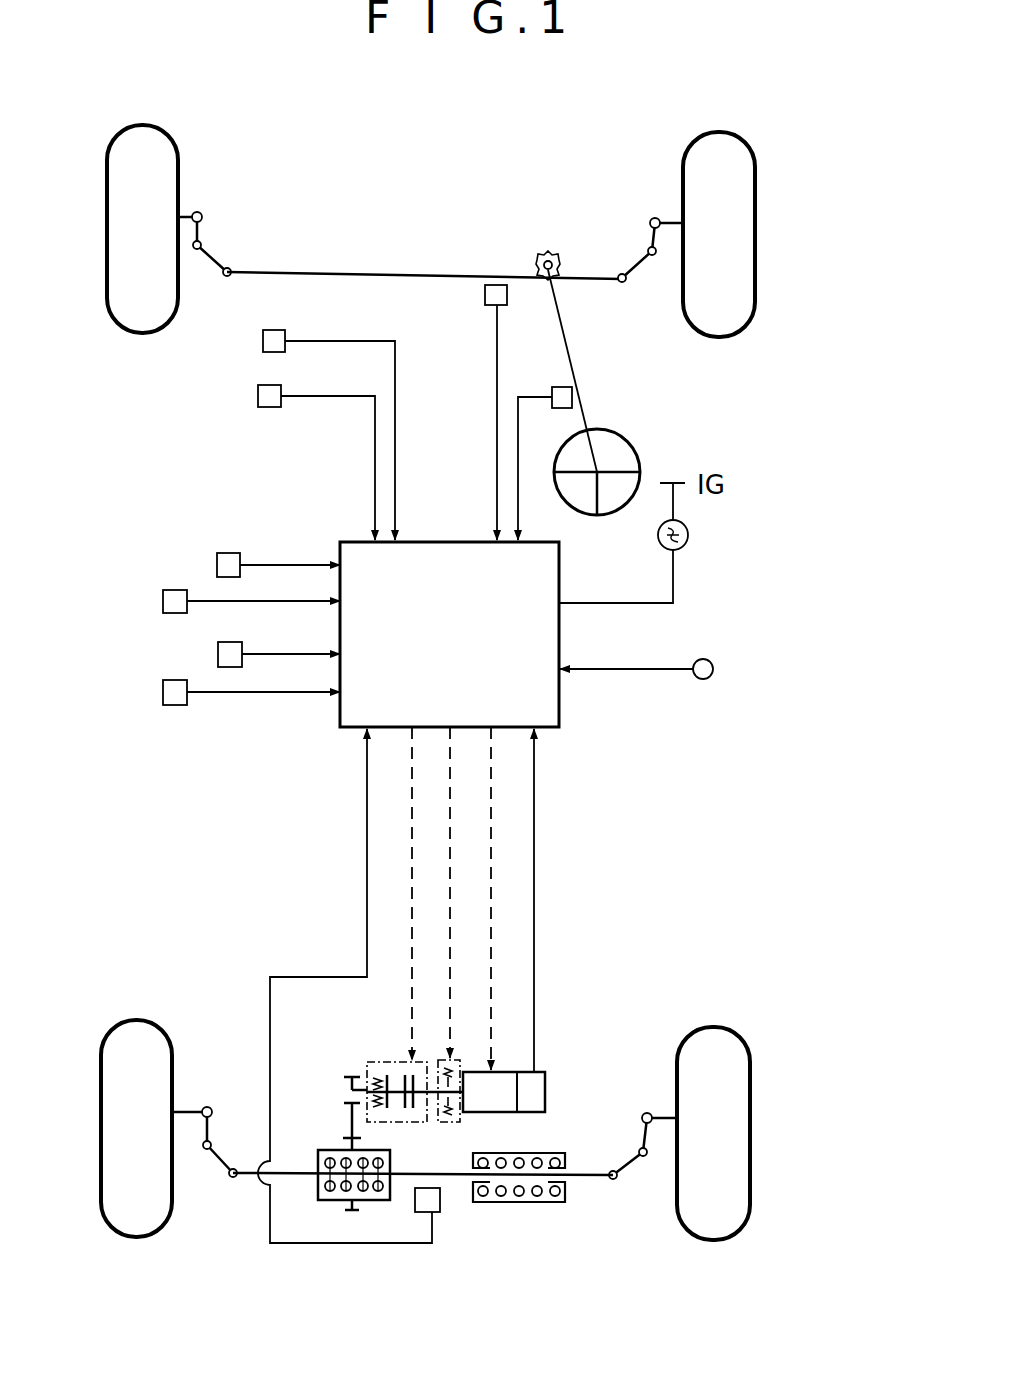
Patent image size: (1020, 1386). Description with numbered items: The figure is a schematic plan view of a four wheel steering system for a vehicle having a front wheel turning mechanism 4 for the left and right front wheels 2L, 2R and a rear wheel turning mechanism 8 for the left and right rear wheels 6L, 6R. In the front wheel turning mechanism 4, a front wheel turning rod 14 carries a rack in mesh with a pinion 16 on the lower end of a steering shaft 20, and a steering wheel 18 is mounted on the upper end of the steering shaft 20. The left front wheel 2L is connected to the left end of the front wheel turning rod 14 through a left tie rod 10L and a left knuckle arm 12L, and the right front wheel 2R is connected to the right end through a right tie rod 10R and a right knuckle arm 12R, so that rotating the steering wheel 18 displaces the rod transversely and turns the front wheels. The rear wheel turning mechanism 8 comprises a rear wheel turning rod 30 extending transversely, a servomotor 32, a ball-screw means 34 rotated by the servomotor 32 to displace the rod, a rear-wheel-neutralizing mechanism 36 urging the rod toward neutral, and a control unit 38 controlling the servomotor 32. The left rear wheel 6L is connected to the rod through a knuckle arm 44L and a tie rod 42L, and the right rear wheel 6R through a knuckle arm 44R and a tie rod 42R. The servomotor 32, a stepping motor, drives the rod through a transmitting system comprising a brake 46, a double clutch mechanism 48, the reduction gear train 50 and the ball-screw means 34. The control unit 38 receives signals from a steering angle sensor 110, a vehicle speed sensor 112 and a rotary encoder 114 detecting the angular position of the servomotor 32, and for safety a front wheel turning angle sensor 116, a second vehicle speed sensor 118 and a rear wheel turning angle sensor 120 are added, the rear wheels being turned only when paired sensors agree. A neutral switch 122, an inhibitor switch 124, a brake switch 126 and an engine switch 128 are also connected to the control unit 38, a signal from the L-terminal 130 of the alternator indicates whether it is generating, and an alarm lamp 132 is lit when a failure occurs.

The left front wheel 2L is at (160, 128).
The right front wheel 2R is at (740, 138).
The front wheel turning mechanism 4 is at (468, 225).
The left rear wheel 6L is at (158, 1020).
The right rear wheel 6R is at (750, 1055).
The rear wheel turning mechanism 8 is at (615, 1000).
The left tie rod 10L is at (218, 264).
The right tie rod 10R is at (632, 285).
The left knuckle arm 12L is at (205, 226).
The right knuckle arm 12R is at (645, 238).
The front wheel turning rod 14 is at (375, 270).
The pinion 16 is at (546, 248).
The steering wheel 18 is at (636, 447).
The steering shaft 20 is at (577, 383).
The rear wheel turning rod 30 is at (578, 1180).
The servomotor 32 is at (490, 1112).
The ball-screw means 34 is at (316, 1142).
The rear-wheel-neutralizing mechanism 36 is at (516, 1207).
The control unit 38 is at (559, 703).
The tie rod 42L is at (225, 1165).
The tie rod 42R is at (625, 1168).
The knuckle arm 44L is at (215, 1118).
The knuckle arm 44R is at (638, 1122).
The brake 46 is at (450, 1123).
The double clutch mechanism 48 is at (377, 1060).
The reduction gear train 50 is at (350, 1116).
The steering angle sensor 110 is at (560, 387).
The vehicle speed sensor 112 is at (263, 341).
The rotary encoder 114 is at (545, 1080).
The front wheel turning angle sensor 116 is at (485, 302).
The second vehicle speed sensor 118 is at (270, 407).
The rear wheel turning angle sensor 120 is at (442, 1212).
The neutral switch 122 is at (233, 553).
The inhibitor switch 124 is at (177, 590).
The brake switch 126 is at (218, 650).
The engine switch 128 is at (176, 705).
The L-terminal 130 is at (713, 672).
The alarm lamp 132 is at (689, 537).